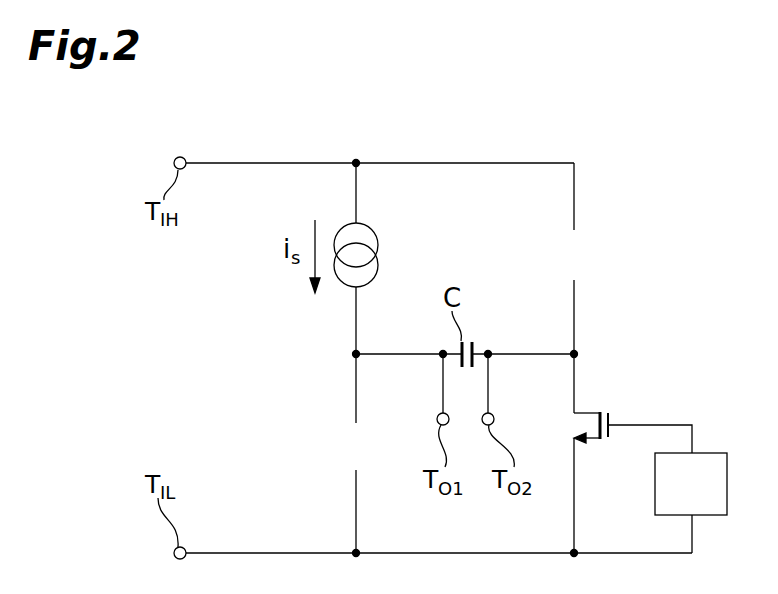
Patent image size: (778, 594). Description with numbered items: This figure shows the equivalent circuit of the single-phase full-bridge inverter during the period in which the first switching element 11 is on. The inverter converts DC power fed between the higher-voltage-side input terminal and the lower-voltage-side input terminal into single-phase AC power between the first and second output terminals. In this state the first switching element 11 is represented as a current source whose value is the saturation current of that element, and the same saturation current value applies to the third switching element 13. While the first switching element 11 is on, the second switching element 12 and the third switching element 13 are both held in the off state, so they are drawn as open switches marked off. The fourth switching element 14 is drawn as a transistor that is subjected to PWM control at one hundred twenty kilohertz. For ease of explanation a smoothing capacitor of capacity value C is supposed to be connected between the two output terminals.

The first switching element 11 is at (378, 229).
The second switching element 12 is at (334, 441).
The third switching element 13 is at (597, 256).
The fourth switching element 14 is at (610, 418).